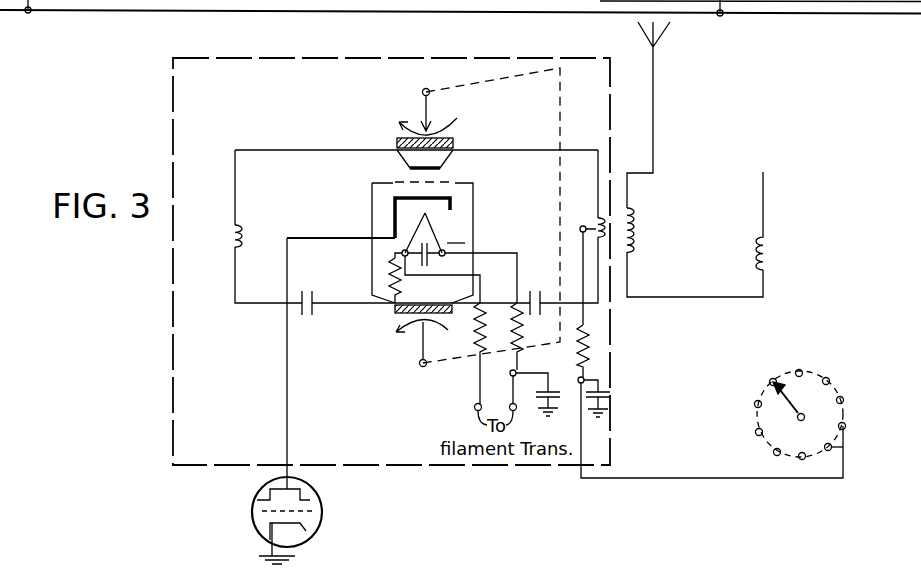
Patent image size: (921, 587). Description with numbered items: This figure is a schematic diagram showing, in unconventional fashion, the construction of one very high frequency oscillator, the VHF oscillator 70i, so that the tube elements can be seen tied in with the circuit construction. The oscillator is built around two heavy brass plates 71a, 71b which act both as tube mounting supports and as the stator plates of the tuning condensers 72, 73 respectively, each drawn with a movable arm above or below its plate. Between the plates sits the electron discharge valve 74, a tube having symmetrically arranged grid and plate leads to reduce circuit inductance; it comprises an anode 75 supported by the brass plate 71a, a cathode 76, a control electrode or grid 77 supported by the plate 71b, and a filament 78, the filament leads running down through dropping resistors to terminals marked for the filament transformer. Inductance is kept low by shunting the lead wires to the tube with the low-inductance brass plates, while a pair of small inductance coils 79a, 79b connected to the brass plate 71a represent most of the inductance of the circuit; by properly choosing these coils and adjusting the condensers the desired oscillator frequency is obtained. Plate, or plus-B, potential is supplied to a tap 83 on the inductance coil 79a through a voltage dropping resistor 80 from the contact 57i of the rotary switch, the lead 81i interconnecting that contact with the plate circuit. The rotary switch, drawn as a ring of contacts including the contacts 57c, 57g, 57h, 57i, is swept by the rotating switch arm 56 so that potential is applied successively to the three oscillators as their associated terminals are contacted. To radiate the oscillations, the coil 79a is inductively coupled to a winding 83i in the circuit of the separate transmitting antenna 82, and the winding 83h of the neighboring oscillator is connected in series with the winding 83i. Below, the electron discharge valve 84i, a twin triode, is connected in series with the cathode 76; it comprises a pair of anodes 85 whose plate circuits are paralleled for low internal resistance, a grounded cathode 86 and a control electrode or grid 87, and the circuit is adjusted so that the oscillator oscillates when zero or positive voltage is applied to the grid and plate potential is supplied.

The VHF oscillator 70i is at (168, 146).
The brass plate 71a is at (455, 146).
The brass plate 71b is at (390, 322).
The tuning condenser 72 is at (424, 121).
The tuning condenser 73 is at (410, 348).
The electron discharge valve 74 is at (402, 227).
The anode 75 is at (443, 170).
The cathode 76 is at (456, 200).
The control electrode or grid 77 is at (398, 180).
The filament 78 is at (378, 233).
The inductance coil 79a is at (593, 218).
The inductance coil 79b is at (256, 224).
The voltage dropping resistor 80 is at (590, 349).
The lead 81i is at (653, 478).
The antenna 82 is at (660, 38).
The tap 83 is at (580, 229).
The winding 83i is at (636, 230).
The winding 83h is at (772, 250).
The electron discharge valve 84i is at (291, 519).
The anodes 85 is at (256, 492).
The grounded cathode 86 is at (266, 535).
The control electrode or grid 87 is at (262, 511).
The switch arm 56 is at (806, 408).
The contact 57c is at (772, 379).
The contact 57g is at (801, 460).
The contact 57h is at (843, 447).
The contact 57i is at (846, 427).